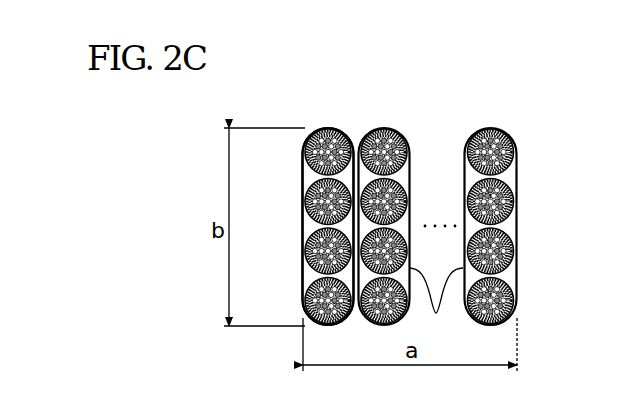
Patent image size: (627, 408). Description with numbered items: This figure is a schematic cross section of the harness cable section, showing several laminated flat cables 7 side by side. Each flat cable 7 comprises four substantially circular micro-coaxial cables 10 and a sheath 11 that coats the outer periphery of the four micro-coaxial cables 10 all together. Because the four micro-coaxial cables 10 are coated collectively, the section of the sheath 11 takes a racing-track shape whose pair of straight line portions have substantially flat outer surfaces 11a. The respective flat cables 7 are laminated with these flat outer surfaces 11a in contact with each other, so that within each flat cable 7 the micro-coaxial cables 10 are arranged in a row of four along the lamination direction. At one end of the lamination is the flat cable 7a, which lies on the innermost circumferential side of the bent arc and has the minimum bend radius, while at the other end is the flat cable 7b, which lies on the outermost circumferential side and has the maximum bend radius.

The flat cable 7 is at (399, 127).
The flat cable on one end in the lamination direction 7a is at (322, 191).
The flat cable on the other end in the lamination direction 7b is at (501, 127).
The micro-coaxial cable 10 is at (305, 219).
The sheath 11 is at (304, 183).
The outer surface of straight line portion 11a is at (436, 306).